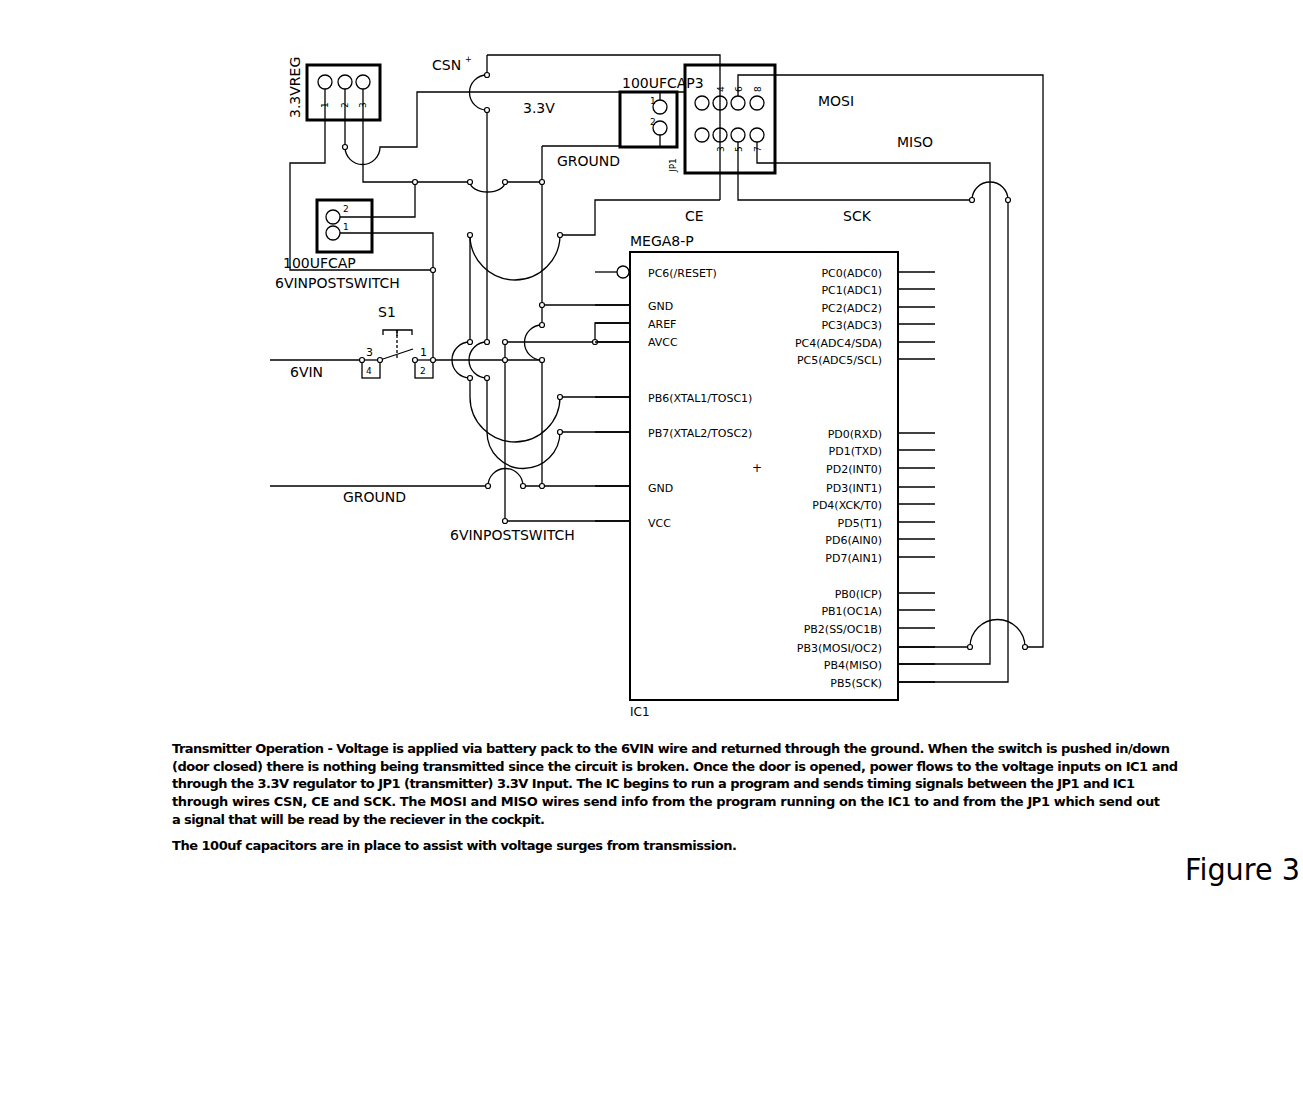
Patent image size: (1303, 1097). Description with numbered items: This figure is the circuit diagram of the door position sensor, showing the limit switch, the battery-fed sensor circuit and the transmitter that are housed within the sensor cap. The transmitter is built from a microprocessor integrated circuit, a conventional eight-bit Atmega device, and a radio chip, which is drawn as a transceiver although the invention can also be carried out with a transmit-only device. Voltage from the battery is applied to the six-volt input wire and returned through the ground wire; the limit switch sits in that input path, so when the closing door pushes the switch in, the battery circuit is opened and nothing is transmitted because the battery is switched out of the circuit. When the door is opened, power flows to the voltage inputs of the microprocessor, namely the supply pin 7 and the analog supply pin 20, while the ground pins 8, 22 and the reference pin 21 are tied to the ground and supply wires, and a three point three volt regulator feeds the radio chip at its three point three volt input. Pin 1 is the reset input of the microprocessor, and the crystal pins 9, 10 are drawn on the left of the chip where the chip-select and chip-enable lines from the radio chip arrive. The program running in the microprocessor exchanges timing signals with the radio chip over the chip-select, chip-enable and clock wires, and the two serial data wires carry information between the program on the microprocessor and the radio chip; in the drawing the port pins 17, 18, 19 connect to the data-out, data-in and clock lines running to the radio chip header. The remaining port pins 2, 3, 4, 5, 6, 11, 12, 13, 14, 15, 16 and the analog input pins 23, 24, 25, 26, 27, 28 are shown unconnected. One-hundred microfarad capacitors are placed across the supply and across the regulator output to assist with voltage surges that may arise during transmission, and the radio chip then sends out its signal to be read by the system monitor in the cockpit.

The PC6(/RESET) pin 1 is at (612, 268).
The PD0(RXD) pin 2 is at (916, 426).
The PD1(TXD) pin 3 is at (916, 443).
The PD2(INT0) pin 4 is at (916, 461).
The PD3(INT1) pin 5 is at (916, 480).
The PD4(XCK/T0) pin 6 is at (916, 497).
The VCC pin 7 is at (612, 514).
The GND pin 8 is at (612, 479).
The PB6(XTAL1/TOSC1) pin 9 is at (612, 390).
The PB7(XTAL2/TOSC2) pin 10 is at (612, 425).
The PD5(T1) pin 11 is at (916, 515).
The PD6(AIN0) pin 12 is at (916, 532).
The PD7(AIN1) pin 13 is at (916, 550).
The door 14 is at (916, 586).
The PB1(OC1A) pin 15 is at (916, 603).
The PB2(SS/OC1B) pin 16 is at (916, 621).
The PB3(MOSI/OC2) pin 17 is at (916, 640).
The PB4(MISO) pin 18 is at (916, 657).
The PB5(SCK) pin 19 is at (916, 675).
The door position sensor 20 is at (612, 335).
The AREF pin 21 is at (612, 316).
The GND pin 22 is at (612, 298).
The PC0(ADC0) pin 23 is at (916, 265).
The cap 24 is at (916, 282).
The PC2(ADC2) pin 25 is at (916, 300).
The limit switch 26 is at (916, 317).
The PC4(ADC4/SDA) pin 27 is at (916, 335).
The PC5(ADC5/SCL) pin 28 is at (916, 352).